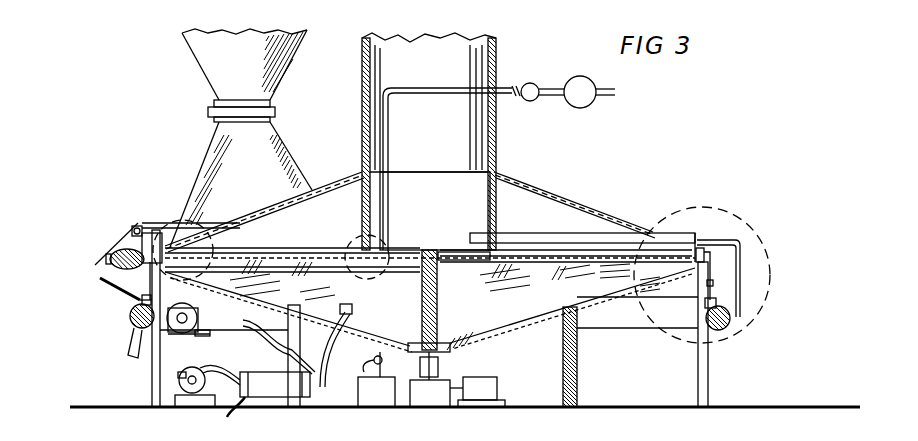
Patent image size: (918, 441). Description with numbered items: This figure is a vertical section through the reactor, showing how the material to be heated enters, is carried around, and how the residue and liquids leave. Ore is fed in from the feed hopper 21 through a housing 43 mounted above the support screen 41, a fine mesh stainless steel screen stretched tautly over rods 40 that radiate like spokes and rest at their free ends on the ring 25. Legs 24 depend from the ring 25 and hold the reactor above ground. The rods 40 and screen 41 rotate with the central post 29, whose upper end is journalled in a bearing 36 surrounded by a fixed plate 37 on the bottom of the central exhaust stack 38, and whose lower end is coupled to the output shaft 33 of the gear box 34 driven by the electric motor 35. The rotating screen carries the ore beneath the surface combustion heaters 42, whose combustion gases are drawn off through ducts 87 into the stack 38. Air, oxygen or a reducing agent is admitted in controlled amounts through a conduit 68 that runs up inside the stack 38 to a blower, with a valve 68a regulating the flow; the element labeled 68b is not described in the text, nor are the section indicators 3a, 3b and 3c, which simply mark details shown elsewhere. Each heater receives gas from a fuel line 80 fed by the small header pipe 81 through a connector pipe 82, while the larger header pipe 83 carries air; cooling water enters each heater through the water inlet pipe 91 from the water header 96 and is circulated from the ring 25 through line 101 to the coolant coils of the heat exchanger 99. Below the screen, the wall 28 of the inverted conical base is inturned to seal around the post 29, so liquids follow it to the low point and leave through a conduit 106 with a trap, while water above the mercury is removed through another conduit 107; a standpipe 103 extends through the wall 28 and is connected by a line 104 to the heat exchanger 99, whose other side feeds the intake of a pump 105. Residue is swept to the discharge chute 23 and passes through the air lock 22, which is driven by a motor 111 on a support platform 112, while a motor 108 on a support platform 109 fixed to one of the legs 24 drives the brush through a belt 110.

The feed hopper 21 is at (228, 159).
The central exhaust stack 38 is at (435, 134).
The conduit 68 is at (384, 132).
The valve 68a is at (527, 83).
The pump 68b is at (570, 80).
The ducts 87 is at (343, 177).
The surface combustion heaters 42 is at (588, 232).
The ring 25 is at (272, 262).
The rods 40 is at (518, 262).
The support screen 41 is at (565, 262).
The bearing 36 is at (430, 250).
The fixed plate 37 is at (452, 252).
The central post 29 is at (440, 330).
The wall 28 is at (480, 335).
The output shaft 33 is at (440, 368).
The gear box 34 is at (419, 400).
The electric motor 35 is at (469, 396).
The conduit 107 is at (362, 399).
The line 104 is at (335, 340).
The standpipe 103 is at (350, 312).
The conduit 106 is at (374, 362).
The section detail 3a is at (168, 228).
The section detail 3b is at (356, 268).
The section detail 3c is at (652, 236).
The housing 43 is at (152, 240).
The belt 110 is at (131, 231).
The motor 108 is at (108, 259).
The support platform 109 is at (100, 278).
The air lock 22 is at (140, 296).
The water header 96 is at (138, 305).
The small header pipe 81 is at (138, 312).
The larger header pipe 83 is at (132, 322).
The chute 23 is at (130, 352).
The legs 24 is at (150, 388).
The fuel line 80 is at (741, 268).
The water inlet pipe 91 is at (742, 243).
The connector pipe 82 is at (722, 300).
The motor 111 is at (186, 318).
The support platform 112 is at (192, 336).
The pump 105 is at (200, 372).
The heat exchanger 99 is at (262, 393).
The line 101 is at (252, 336).